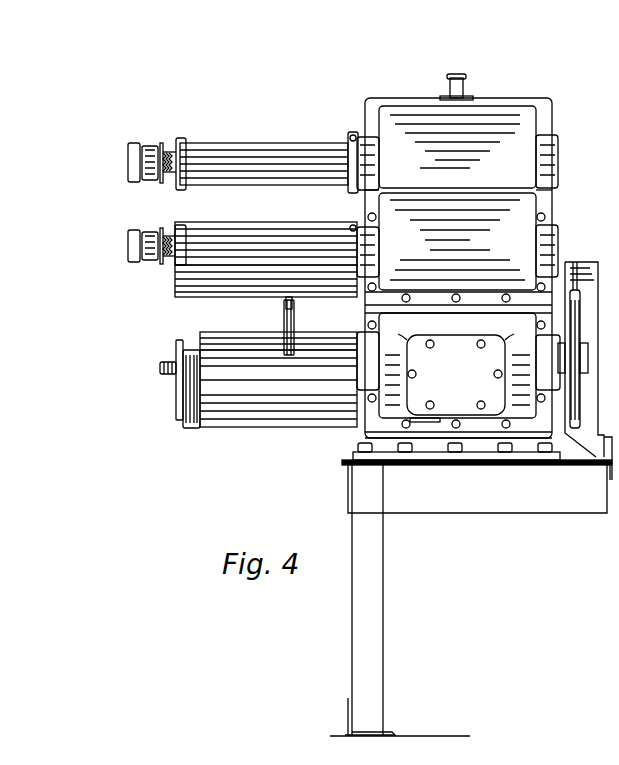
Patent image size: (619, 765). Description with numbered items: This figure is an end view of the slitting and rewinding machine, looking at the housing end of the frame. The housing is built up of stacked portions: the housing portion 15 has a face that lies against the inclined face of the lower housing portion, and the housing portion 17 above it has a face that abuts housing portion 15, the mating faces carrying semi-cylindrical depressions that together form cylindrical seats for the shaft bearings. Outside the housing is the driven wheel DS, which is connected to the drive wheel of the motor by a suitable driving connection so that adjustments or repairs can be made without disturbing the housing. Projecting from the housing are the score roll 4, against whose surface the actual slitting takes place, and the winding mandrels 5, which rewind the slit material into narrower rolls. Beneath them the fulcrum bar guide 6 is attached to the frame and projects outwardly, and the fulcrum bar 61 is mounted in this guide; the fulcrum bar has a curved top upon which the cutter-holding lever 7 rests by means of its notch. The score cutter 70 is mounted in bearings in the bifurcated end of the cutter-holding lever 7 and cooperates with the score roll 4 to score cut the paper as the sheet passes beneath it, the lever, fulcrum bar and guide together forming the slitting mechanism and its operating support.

The score roll 4 is at (177, 283).
The winding mandrels 5 is at (263, 149).
The fulcrum bar guide 6 is at (240, 427).
The cutter-holding lever 7 is at (298, 316).
The housing portion 15 is at (490, 123).
The housing portion 17 is at (483, 228).
The fulcrum bar 61 is at (205, 342).
The score cutter 70 is at (284, 303).
The driven wheel DS is at (575, 262).